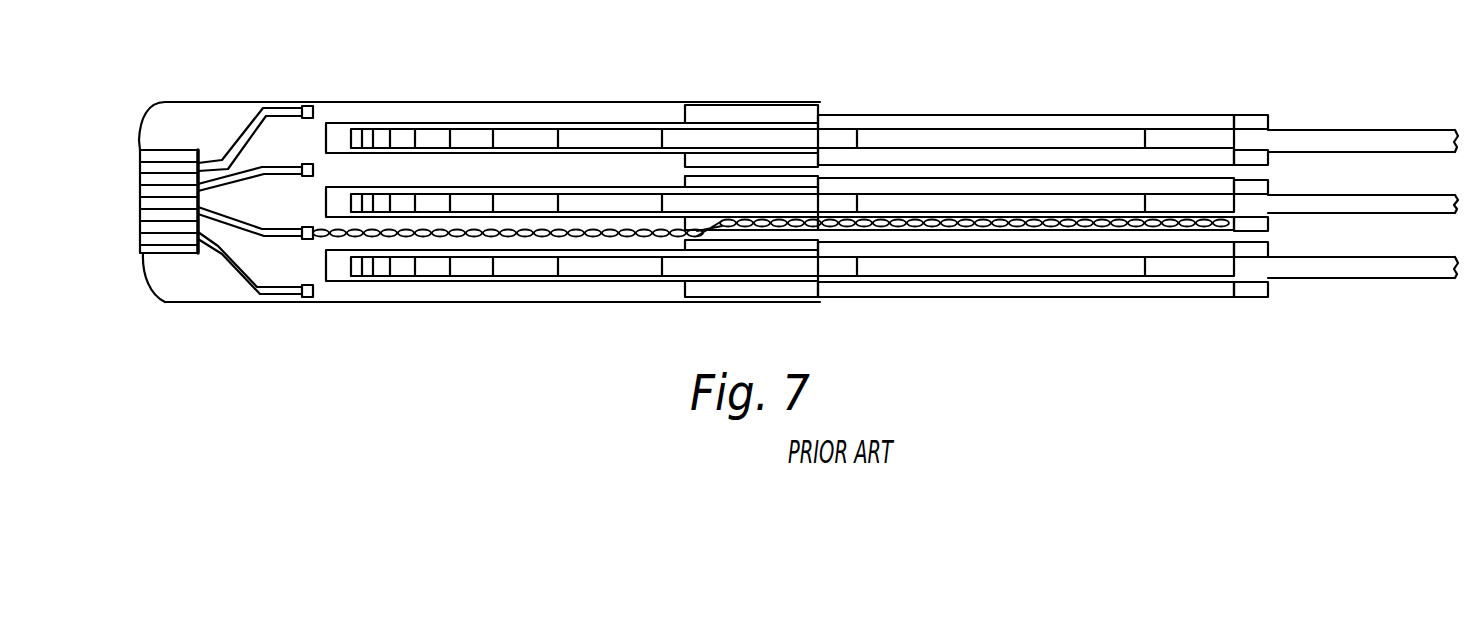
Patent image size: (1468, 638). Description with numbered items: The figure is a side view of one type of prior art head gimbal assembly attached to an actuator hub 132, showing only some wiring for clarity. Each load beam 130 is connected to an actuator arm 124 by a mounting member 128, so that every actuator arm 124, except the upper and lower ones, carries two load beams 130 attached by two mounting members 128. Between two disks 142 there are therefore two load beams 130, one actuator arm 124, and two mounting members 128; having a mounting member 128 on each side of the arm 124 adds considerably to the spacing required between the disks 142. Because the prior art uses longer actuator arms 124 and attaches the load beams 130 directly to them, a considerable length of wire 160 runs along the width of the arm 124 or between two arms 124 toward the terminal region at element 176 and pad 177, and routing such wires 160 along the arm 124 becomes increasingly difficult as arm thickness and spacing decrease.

The electrode rail strips 124 is at (375, 220).
The central sleeve blocks 128 is at (773, 185).
The distal sleeve bands 130 is at (948, 165).
The end blocks 132 is at (1250, 158).
The distal tubes 142 is at (1389, 215).
The twisted wire pair 160 is at (530, 237).
The connector housing 176 is at (180, 254).
The lead wires with terminals 177 is at (313, 293).